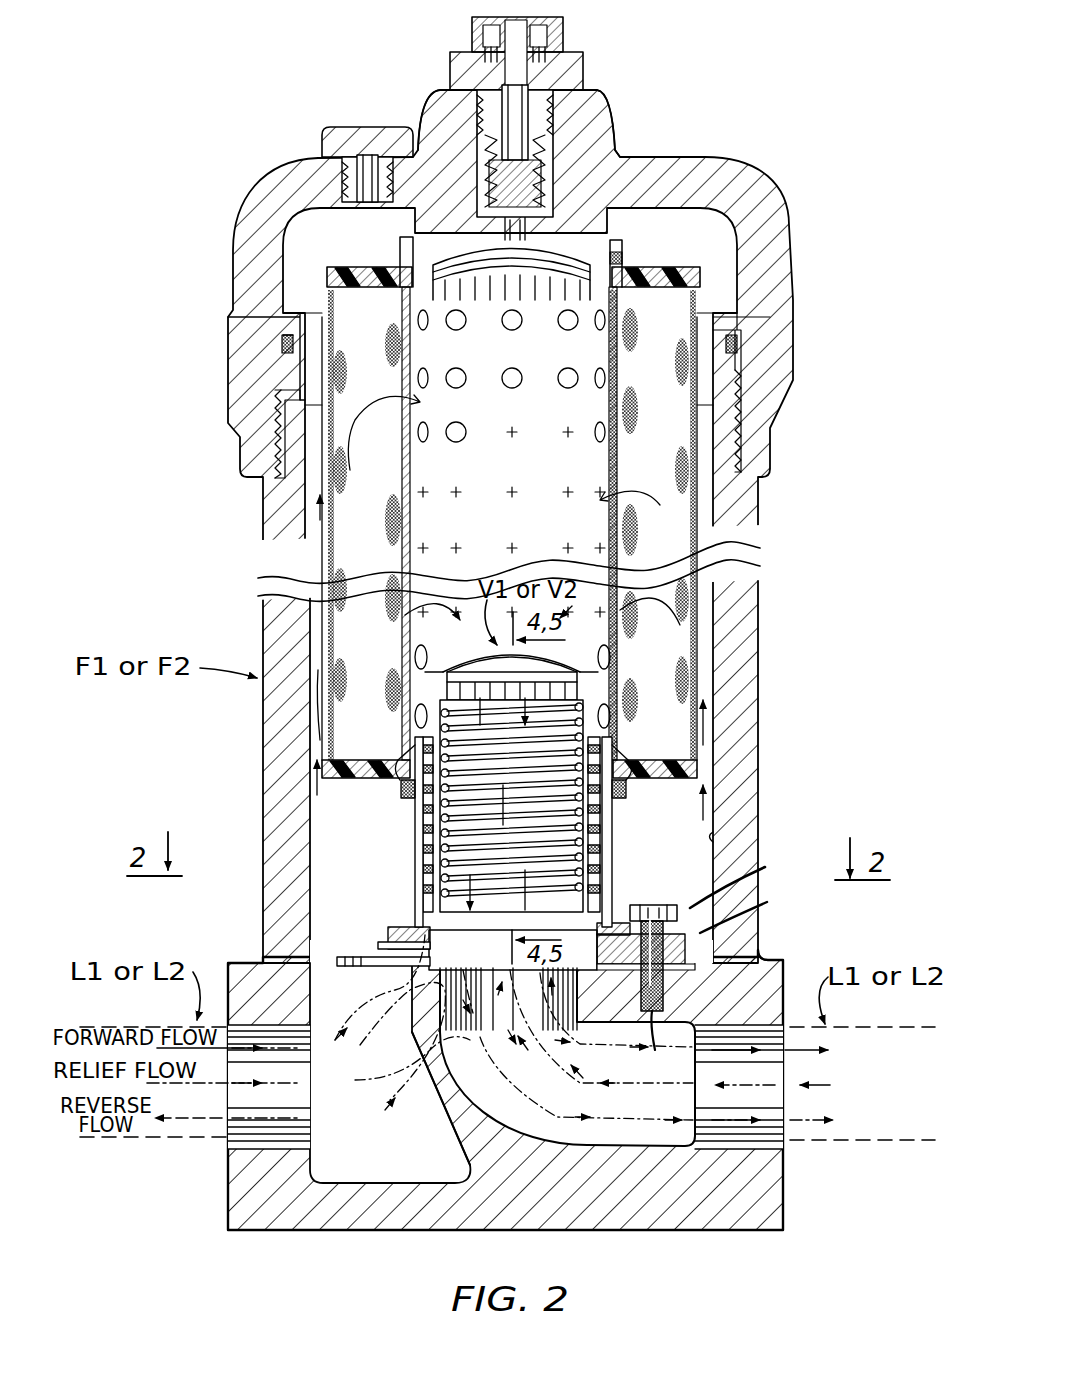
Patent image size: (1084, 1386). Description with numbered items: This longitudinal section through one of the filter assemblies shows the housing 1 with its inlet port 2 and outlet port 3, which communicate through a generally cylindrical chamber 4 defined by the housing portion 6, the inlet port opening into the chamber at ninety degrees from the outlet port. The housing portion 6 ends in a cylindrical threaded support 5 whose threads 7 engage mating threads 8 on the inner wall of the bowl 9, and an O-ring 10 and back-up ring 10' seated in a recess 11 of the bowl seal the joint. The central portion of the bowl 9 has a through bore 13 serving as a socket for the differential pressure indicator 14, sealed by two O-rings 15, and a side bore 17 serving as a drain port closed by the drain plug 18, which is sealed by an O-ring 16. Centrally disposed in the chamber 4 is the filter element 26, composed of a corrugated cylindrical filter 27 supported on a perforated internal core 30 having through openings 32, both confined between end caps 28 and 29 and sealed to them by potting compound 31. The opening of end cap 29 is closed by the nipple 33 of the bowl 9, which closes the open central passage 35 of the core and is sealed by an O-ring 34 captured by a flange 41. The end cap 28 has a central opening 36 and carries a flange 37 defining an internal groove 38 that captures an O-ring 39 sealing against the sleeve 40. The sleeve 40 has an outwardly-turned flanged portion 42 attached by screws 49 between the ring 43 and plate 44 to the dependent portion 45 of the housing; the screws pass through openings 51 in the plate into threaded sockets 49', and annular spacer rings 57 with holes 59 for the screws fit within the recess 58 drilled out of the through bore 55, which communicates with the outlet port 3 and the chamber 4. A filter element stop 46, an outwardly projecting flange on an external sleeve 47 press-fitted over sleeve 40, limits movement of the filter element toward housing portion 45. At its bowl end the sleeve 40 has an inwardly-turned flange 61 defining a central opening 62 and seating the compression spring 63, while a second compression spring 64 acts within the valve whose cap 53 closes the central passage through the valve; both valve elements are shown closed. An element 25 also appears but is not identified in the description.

The housing 1 is at (763, 1226).
The inlet port 2 is at (248, 1133).
The outlet port 3 is at (770, 1133).
The chamber 4 is at (708, 824).
The cylindrical threaded support 5 is at (293, 447).
The housing portion 6 is at (277, 730).
The threads 7 is at (283, 468).
The mating threads 8 is at (740, 447).
The bowl 9 is at (768, 196).
The O-ring 10 is at (231, 353).
The back-up ring 10' is at (240, 360).
The recess 11 is at (283, 336).
The through bore 13 is at (455, 160).
The differential pressure indicator 14 is at (580, 32).
The O-rings 15 is at (548, 180).
The O-ring 16 is at (345, 163).
The side bore 17 is at (345, 185).
The drain plug 18 is at (345, 128).
The end cap lip 25 is at (408, 242).
The filter element 26 is at (703, 605).
The corrugated cylindrical filter 27 is at (683, 683).
The end cap 28 is at (378, 783).
The end cap 29 is at (354, 267).
The internal core 30 is at (410, 540).
The potting compound 31 is at (385, 288).
The through openings 32 is at (458, 425).
The nipple 33 is at (590, 285).
The O-ring 34 is at (625, 260).
The open central passage 35 is at (498, 484).
The central opening 36 is at (610, 800).
The flange 37 is at (400, 800).
The internal groove 38 is at (412, 832).
The O-ring 39 is at (622, 790).
The sleeve 40 is at (614, 850).
The flange 41 is at (624, 252).
The outwardly-turned flanged portion 42 is at (622, 922).
The ring 43 is at (380, 925).
The plate 44 is at (402, 927).
The dependent portion of the housing 45 is at (757, 958).
The filter element stop 46 is at (688, 829).
The external sleeve 47 is at (603, 865).
The screws 49 is at (663, 940).
The threaded sockets 49' is at (652, 1046).
The openings 51 is at (747, 912).
The cap 53 is at (482, 658).
The through bore 55 is at (448, 1010).
The annular spacer rings 57 is at (686, 950).
The recess 58 is at (336, 968).
The holes 59 is at (463, 952).
The inwardly-turned flange 61 is at (428, 695).
The central opening 62 is at (599, 686).
The compression spring 63 is at (425, 880).
The second compression spring 64 is at (527, 712).